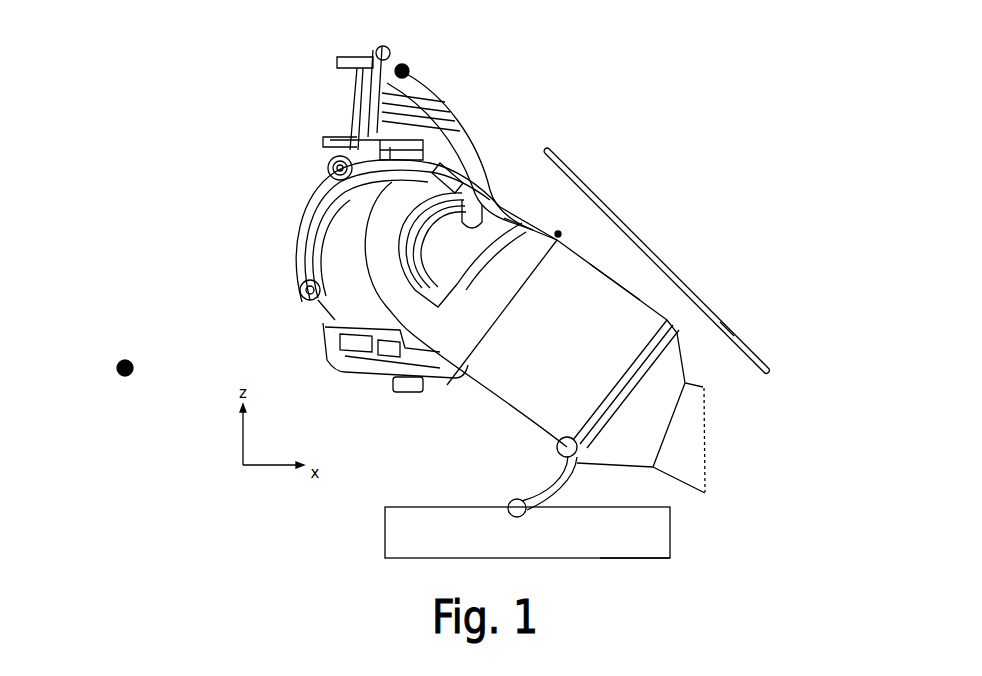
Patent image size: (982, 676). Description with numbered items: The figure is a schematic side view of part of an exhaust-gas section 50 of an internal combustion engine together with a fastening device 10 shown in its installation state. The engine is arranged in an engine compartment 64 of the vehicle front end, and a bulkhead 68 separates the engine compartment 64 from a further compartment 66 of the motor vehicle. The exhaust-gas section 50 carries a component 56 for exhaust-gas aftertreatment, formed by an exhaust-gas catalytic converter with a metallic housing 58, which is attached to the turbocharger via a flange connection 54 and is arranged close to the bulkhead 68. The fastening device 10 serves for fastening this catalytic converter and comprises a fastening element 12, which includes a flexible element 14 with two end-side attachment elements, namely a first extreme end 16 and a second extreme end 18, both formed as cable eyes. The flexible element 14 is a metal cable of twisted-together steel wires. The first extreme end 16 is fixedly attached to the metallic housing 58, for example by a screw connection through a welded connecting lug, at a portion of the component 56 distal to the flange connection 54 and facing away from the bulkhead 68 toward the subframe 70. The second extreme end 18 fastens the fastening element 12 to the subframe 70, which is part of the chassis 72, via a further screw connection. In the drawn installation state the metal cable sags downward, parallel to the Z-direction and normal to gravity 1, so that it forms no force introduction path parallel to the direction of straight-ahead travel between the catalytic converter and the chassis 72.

The gravity 1 is at (118, 366).
The fastening device 10 is at (730, 512).
The fastening element 12 is at (462, 452).
The flexible element 14 is at (556, 456).
The first extreme end 16 is at (626, 413).
The second extreme end 18 is at (508, 507).
The exhaust-gas section 50 is at (265, 85).
The flange connection 54 is at (303, 296).
The component for exhaust-gas aftertreatment 56 is at (557, 230).
The metallic housing 58 is at (607, 276).
The engine compartment 64 is at (272, 208).
The compartment 66 is at (716, 250).
The bulkhead 68 is at (730, 316).
The subframe 70 is at (403, 541).
The chassis 72 is at (632, 573).